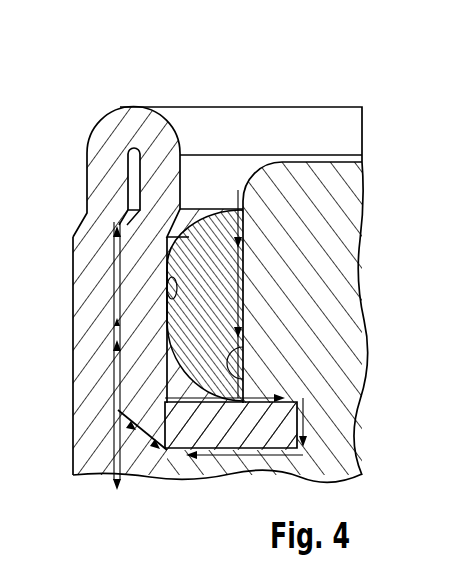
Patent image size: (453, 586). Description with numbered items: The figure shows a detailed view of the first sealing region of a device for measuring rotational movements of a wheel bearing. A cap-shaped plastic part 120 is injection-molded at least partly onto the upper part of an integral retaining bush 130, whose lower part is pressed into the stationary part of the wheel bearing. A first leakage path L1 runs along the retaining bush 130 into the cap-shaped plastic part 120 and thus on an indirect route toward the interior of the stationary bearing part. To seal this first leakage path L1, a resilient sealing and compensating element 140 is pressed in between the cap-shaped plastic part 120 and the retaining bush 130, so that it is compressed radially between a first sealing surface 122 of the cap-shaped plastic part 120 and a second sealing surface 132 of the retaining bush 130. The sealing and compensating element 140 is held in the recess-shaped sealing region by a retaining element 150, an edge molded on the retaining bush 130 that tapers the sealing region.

The cap-shaped plastic part 120 is at (327, 240).
The first sealing surface 122 is at (305, 386).
The retaining bush 130 is at (258, 135).
The second sealing surface 132 is at (168, 278).
The sealing and compensating element 140 is at (212, 280).
The retaining element 150 is at (163, 216).
The first leakage path L1 is at (114, 372).